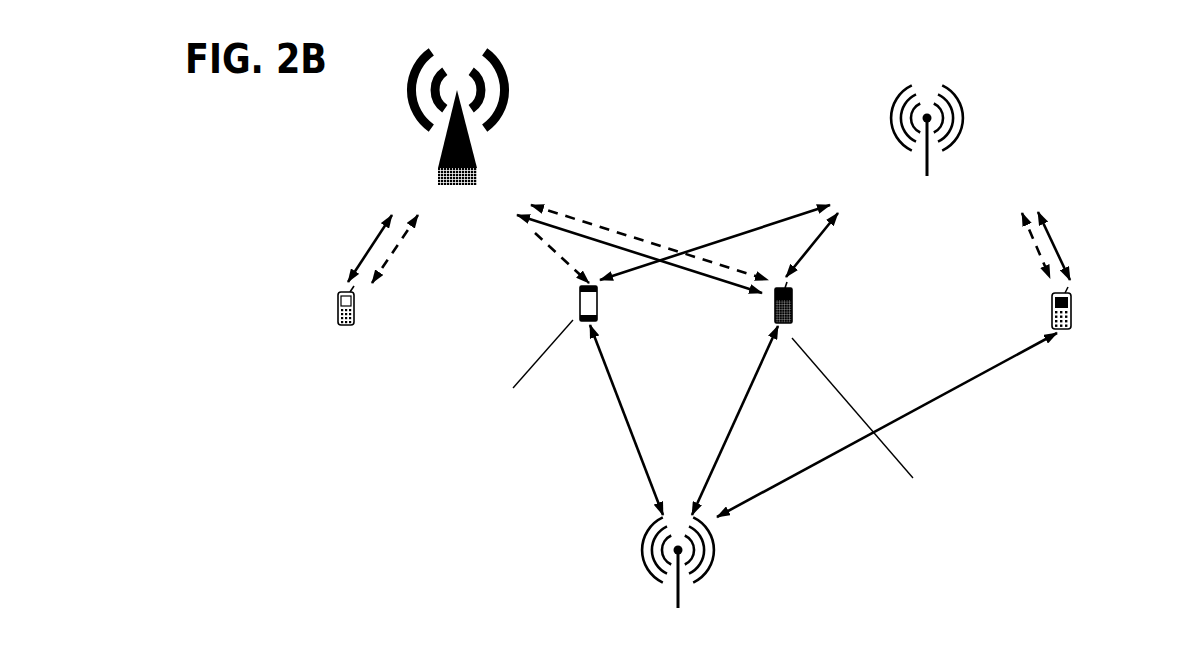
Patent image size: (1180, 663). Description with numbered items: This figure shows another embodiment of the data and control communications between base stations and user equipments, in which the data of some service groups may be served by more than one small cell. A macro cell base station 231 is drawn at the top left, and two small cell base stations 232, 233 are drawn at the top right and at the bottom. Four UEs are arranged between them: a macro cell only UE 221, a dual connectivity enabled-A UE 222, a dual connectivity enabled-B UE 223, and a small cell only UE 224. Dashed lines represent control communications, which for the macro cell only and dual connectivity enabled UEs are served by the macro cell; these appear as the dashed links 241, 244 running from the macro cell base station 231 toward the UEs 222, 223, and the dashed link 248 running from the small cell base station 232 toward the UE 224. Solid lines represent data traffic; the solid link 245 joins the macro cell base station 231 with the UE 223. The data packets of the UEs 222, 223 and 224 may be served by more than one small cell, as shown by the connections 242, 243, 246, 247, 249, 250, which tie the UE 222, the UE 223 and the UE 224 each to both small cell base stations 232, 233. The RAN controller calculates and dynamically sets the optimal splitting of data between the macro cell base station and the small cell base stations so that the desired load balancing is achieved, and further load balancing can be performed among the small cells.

The macro cell only UE 221 is at (356, 323).
The dual connectivity enabled-A UE 222 is at (600, 305).
The dual connectivity enabled-B UE 223 is at (793, 306).
The small cell only UE 224 is at (1073, 313).
The macro base station 231 is at (510, 97).
The small cell base station 232 is at (962, 100).
The small cell base station 233 is at (717, 530).
The macro BS to UE link (downlink) 241 is at (556, 250).
The connection 242 is at (758, 227).
The connection 243 is at (628, 413).
The macro BS to UE link (downlink) 244 is at (607, 228).
The macro BS to UE link 245 is at (688, 272).
The connection 246 is at (806, 257).
The connection 247 is at (740, 413).
The small cell BS to UE link (downlink) 248 is at (1046, 262).
The connection 249 is at (1052, 237).
The connection 250 is at (910, 417).